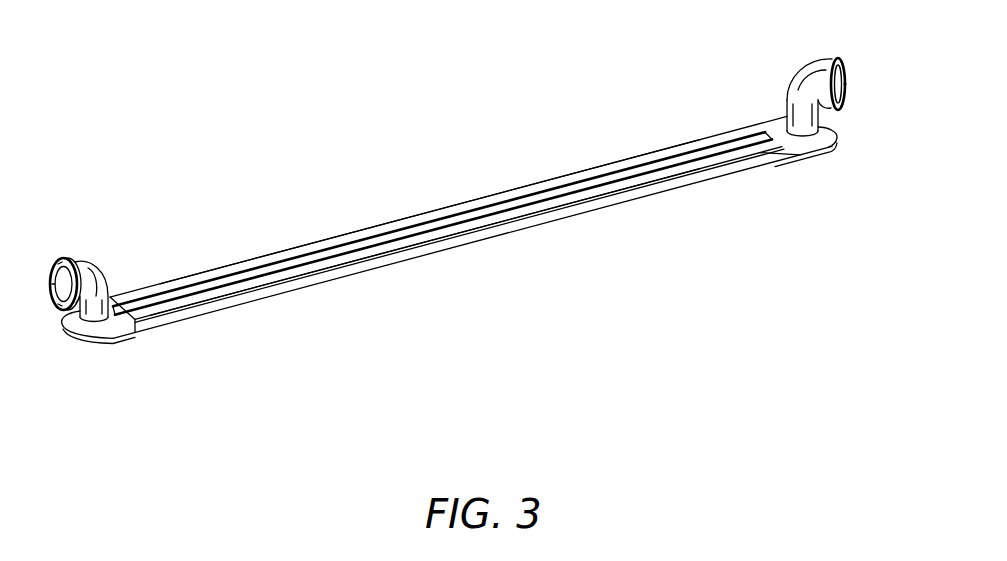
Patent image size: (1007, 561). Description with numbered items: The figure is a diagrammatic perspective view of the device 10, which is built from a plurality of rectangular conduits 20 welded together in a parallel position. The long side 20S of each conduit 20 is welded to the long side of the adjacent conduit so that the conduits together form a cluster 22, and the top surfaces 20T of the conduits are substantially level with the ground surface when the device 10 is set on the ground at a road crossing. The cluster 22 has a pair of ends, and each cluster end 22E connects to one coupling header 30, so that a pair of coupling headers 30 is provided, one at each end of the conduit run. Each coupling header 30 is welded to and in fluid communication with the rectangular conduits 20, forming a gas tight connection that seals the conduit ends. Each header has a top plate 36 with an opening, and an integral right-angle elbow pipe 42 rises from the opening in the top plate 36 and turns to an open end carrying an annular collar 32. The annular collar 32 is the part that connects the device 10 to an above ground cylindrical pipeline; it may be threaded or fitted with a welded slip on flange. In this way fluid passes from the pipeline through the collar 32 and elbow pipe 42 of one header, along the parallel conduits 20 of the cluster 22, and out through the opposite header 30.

The device 10 is at (345, 171).
The rectangular conduit 20 is at (706, 146).
The top surface 20T is at (172, 280).
The long side 20S is at (228, 300).
The cluster 22 is at (466, 273).
The cluster end 22E is at (798, 150).
The coupling header 30 is at (753, 78).
The annular collar 32 is at (828, 58).
The top plate 36 is at (800, 146).
The right-angle elbow pipe 42 is at (820, 108).